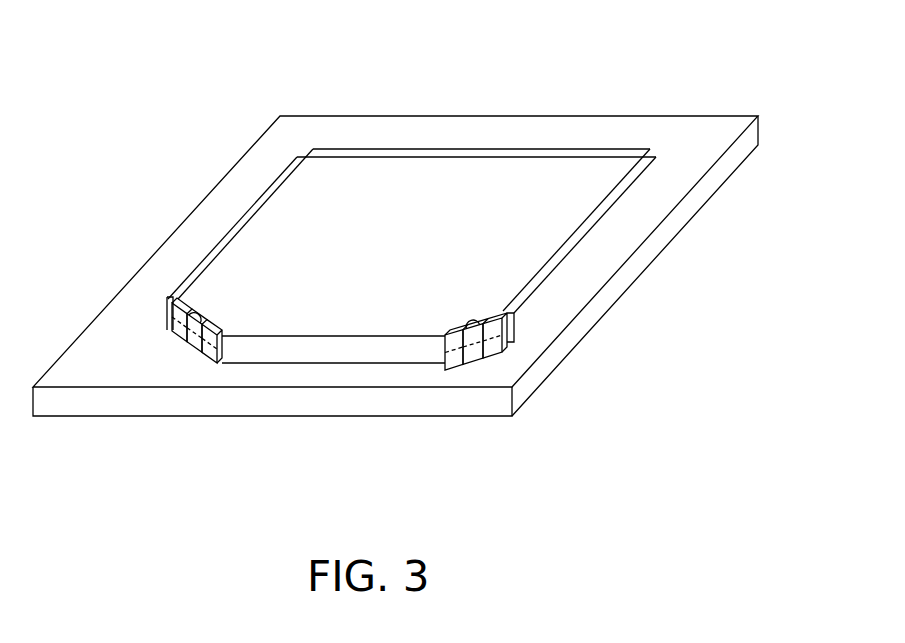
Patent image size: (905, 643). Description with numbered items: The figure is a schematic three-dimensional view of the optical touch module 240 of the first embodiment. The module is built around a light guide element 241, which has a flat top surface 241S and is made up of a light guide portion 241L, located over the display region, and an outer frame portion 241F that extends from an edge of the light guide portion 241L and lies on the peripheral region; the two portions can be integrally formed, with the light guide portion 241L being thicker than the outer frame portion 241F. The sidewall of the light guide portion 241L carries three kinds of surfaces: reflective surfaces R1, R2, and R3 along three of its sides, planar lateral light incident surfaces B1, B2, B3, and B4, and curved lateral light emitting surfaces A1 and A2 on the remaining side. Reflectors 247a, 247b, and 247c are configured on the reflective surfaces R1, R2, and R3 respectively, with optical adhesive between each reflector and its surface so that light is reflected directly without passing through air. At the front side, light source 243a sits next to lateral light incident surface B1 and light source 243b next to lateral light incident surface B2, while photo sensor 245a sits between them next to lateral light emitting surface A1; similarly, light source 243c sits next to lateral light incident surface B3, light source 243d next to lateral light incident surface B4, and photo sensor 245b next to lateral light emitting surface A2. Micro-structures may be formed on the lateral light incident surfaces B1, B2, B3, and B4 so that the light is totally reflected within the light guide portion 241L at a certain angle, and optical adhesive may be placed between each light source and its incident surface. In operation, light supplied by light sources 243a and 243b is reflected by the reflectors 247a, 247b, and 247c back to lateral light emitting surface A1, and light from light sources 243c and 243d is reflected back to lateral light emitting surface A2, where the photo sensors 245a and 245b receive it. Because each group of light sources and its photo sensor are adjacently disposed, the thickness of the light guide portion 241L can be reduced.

The optical touch module 240 is at (723, 506).
The light guide element 241 is at (400, 260).
The outer frame portion 241F is at (580, 134).
The top surface 241S is at (602, 318).
The light guide portion 241L is at (434, 203).
The reflector 247a is at (240, 223).
The reflector 247b is at (503, 154).
The reflector 247c is at (604, 229).
The light source 243a is at (178, 336).
The photo sensor 245a is at (199, 352).
The light source 243b is at (205, 356).
The light source 243c is at (460, 366).
The photo sensor 245b is at (478, 359).
The light source 243d is at (497, 353).
The reflective surface R1 is at (274, 210).
The reflective surface R2 is at (317, 171).
The reflective surface R3 is at (581, 204).
The lateral light emitting surface A1 is at (213, 306).
The lateral light emitting surface A2 is at (470, 317).
The lateral light incident surface B1 is at (191, 296).
The lateral light incident surface B2 is at (219, 327).
The lateral light incident surface B3 is at (453, 330).
The lateral light incident surface B4 is at (492, 312).